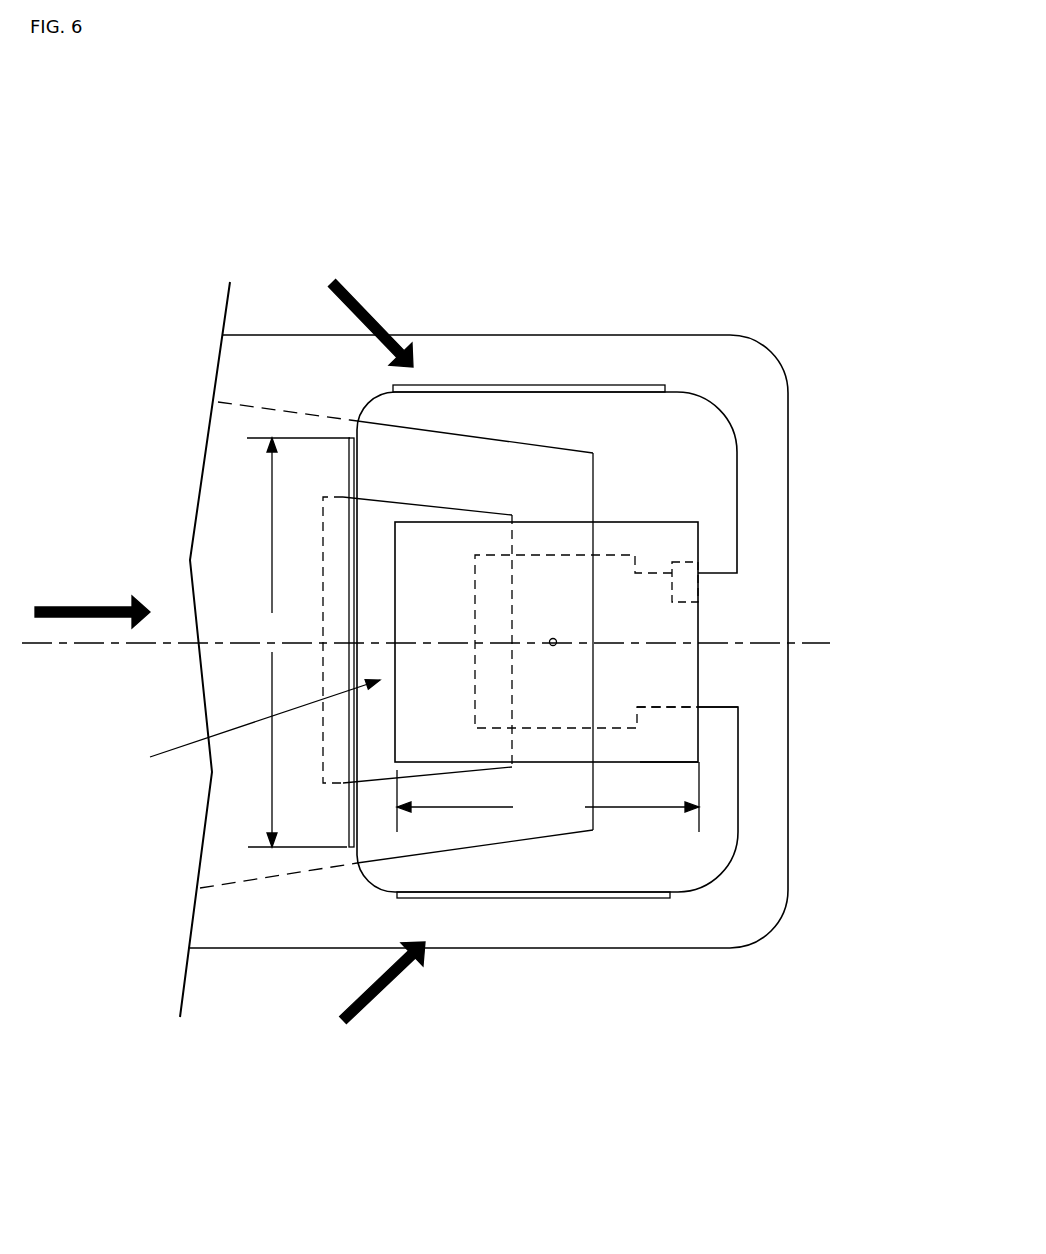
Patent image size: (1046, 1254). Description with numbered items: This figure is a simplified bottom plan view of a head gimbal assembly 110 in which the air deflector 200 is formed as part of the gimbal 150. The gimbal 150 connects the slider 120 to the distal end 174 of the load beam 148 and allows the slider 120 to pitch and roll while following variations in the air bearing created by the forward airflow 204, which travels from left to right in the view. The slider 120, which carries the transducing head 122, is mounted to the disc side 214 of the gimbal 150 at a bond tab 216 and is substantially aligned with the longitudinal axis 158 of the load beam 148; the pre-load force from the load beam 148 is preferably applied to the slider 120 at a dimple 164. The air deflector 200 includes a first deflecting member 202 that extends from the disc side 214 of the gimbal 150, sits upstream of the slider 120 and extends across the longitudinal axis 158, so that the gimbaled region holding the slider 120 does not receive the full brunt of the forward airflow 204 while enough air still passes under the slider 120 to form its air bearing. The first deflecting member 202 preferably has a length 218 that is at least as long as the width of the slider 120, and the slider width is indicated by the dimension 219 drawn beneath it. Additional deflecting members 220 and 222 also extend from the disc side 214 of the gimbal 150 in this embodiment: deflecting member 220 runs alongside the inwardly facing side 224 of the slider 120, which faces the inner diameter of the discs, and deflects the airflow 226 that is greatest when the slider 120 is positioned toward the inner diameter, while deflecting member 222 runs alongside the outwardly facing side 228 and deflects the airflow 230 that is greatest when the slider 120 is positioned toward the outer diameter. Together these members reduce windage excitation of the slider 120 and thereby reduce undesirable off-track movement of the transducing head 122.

The head gimbal assembly 110 is at (708, 230).
The slider 120 is at (690, 737).
The transducing head 122 is at (687, 562).
The load beam 148 is at (572, 462).
The gimbal 150 is at (758, 923).
The longitudinal axis 158 is at (820, 642).
The dimple 164 is at (555, 636).
The distal end 174 is at (468, 453).
The air deflector 200 is at (282, 392).
The first deflecting member 202 is at (348, 535).
The forward airflow 204 is at (83, 605).
The disc side 214 is at (778, 568).
The bond tab 216 is at (613, 562).
The length 218 is at (298, 642).
The width dimension 219 is at (548, 797).
The deflecting member 220 is at (572, 898).
The deflecting member 222 is at (588, 383).
The inwardly facing side 224 is at (682, 762).
The airflow 226 is at (370, 1000).
The outwardly facing side 228 is at (538, 518).
The airflow 230 is at (353, 293).